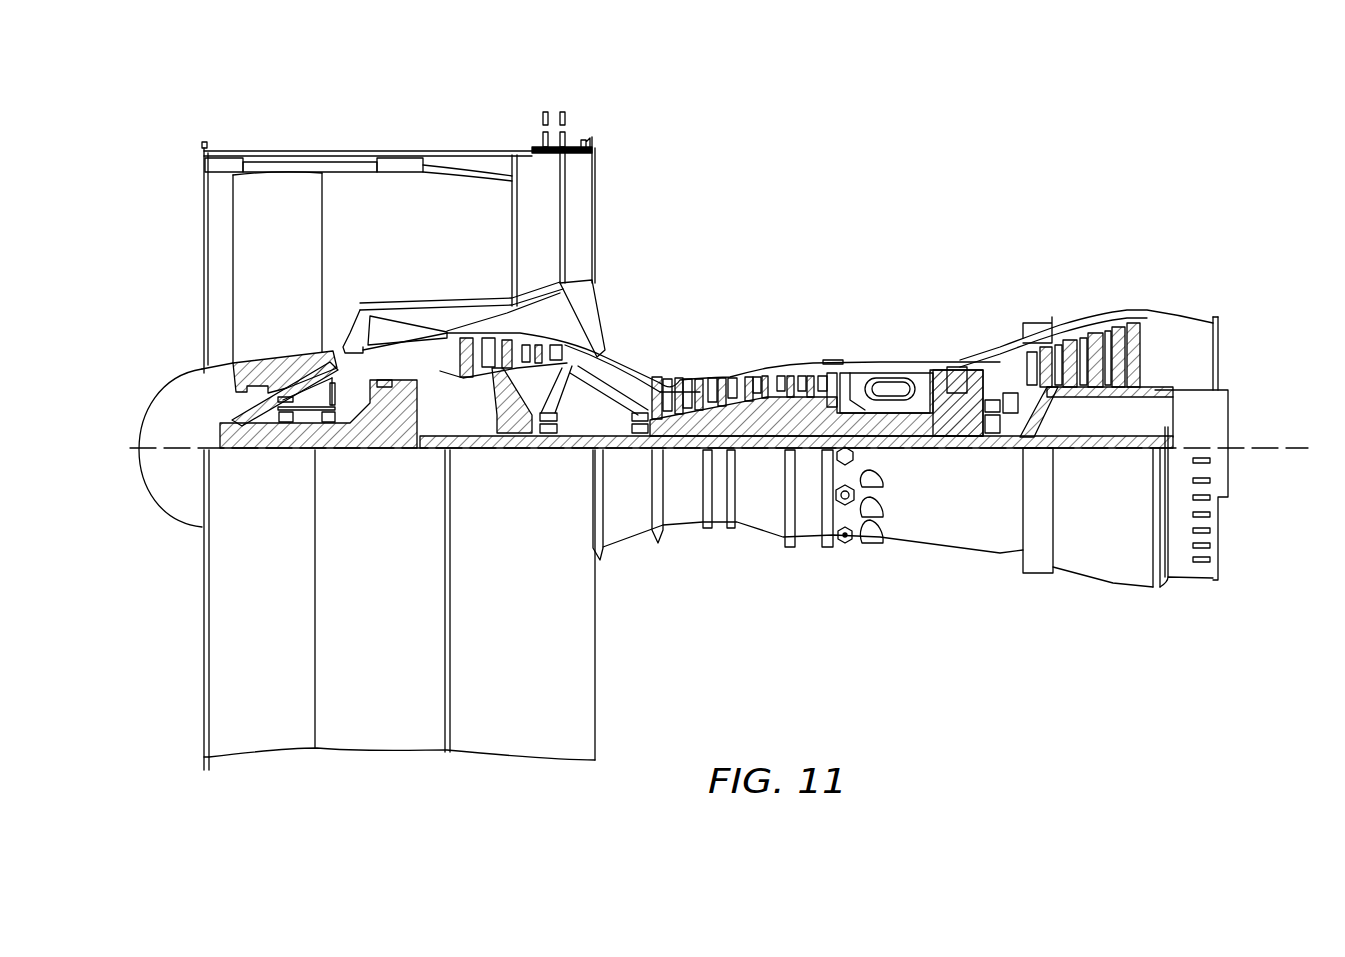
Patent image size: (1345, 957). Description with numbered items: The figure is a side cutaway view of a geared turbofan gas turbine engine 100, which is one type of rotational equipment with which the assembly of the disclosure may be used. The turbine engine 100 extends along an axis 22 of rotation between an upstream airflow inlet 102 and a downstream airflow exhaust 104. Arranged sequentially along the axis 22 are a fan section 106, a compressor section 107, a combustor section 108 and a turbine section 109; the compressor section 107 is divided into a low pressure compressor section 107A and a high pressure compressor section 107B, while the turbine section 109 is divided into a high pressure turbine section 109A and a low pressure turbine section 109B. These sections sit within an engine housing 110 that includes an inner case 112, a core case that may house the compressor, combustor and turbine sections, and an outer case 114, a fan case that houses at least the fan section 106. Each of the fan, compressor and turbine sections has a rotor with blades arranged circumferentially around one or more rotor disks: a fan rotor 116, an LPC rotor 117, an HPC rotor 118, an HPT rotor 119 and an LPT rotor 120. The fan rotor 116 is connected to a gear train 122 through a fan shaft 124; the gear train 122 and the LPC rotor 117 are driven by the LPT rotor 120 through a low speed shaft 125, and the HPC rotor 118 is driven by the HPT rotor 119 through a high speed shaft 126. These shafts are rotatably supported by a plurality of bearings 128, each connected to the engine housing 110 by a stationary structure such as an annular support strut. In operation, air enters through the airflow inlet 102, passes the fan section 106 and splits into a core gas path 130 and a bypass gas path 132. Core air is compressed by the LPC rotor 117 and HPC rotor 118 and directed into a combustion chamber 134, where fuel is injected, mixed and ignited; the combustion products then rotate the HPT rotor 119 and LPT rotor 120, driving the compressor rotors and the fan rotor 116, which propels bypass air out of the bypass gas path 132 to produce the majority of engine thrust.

The axis 22 is at (1271, 437).
The geared turbofan gas turbine engine 100 is at (172, 128).
The upstream airflow inlet 102 is at (205, 219).
The downstream airflow exhaust 104 is at (1218, 350).
The fan section 106 is at (365, 128).
The compressor section 107 is at (805, 70).
The low pressure compressor (LPC) section 107A is at (595, 115).
The high pressure compressor (HPC) section 107B is at (805, 295).
The combustor section 108 is at (927, 292).
The turbine section 109 is at (1178, 225).
The high pressure turbine (HPT) section 109A is at (1003, 292).
The low pressure turbine (LPT) section 109B is at (1178, 292).
The engine housing 110 is at (620, 566).
The inner case 112 is at (807, 540).
The outer case 114 is at (548, 762).
The fan rotor 116 is at (205, 372).
The LPC rotor 117 is at (505, 400).
The HPC rotor 118 is at (757, 413).
The HPT rotor 119 is at (958, 440).
The LPT rotor 120 is at (1094, 396).
The gear train 122 is at (404, 450).
The fan shaft 124 is at (270, 448).
The low speed shaft 125 is at (1100, 450).
The high speed shaft 126 is at (880, 440).
The bearings 128 is at (320, 432).
The core gas path 130 is at (616, 377).
The bypass gas path 132 is at (455, 237).
The combustion chamber 134 is at (888, 386).